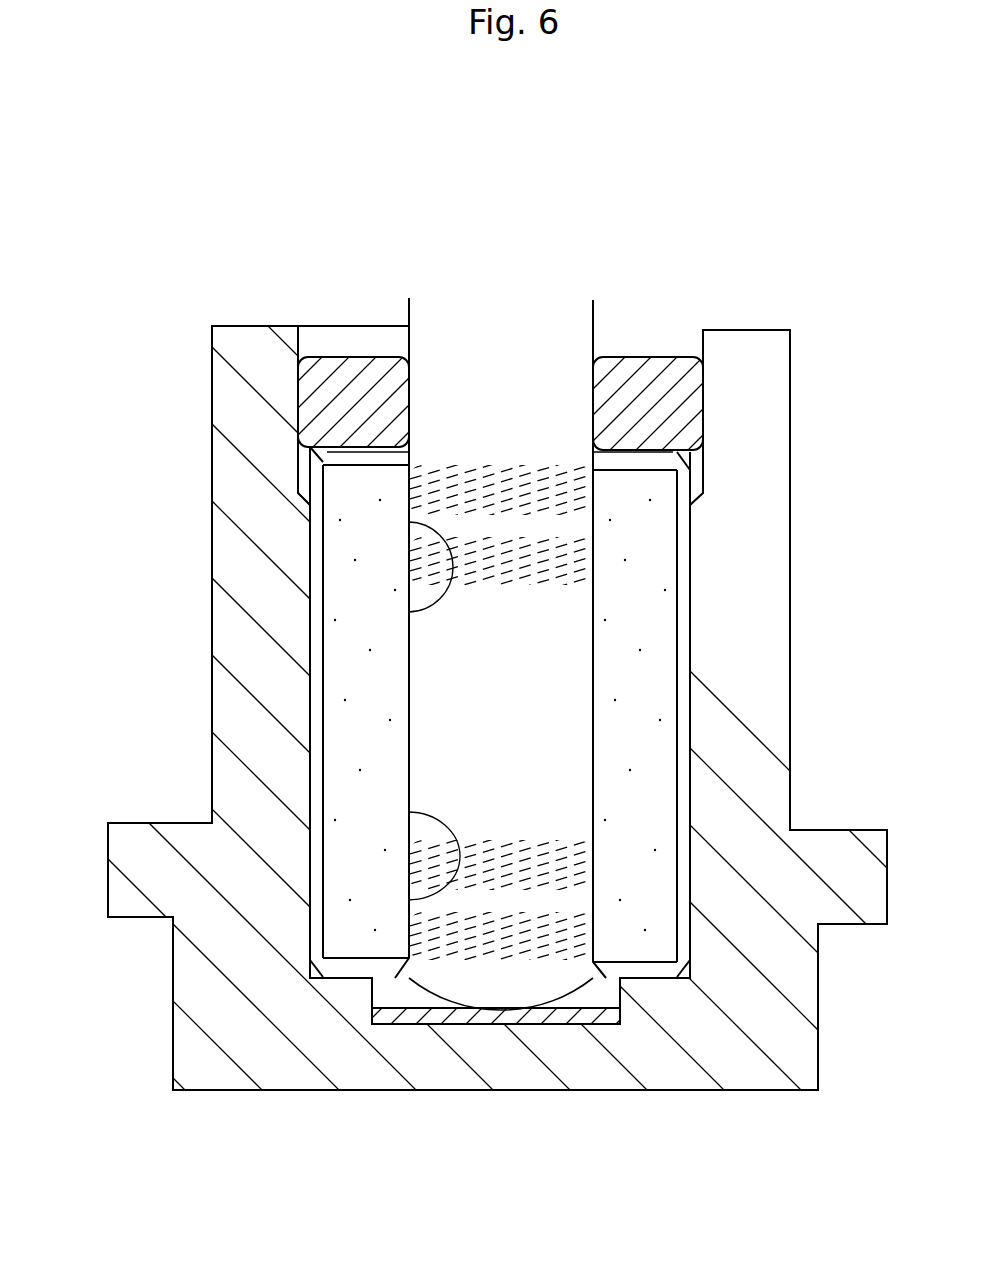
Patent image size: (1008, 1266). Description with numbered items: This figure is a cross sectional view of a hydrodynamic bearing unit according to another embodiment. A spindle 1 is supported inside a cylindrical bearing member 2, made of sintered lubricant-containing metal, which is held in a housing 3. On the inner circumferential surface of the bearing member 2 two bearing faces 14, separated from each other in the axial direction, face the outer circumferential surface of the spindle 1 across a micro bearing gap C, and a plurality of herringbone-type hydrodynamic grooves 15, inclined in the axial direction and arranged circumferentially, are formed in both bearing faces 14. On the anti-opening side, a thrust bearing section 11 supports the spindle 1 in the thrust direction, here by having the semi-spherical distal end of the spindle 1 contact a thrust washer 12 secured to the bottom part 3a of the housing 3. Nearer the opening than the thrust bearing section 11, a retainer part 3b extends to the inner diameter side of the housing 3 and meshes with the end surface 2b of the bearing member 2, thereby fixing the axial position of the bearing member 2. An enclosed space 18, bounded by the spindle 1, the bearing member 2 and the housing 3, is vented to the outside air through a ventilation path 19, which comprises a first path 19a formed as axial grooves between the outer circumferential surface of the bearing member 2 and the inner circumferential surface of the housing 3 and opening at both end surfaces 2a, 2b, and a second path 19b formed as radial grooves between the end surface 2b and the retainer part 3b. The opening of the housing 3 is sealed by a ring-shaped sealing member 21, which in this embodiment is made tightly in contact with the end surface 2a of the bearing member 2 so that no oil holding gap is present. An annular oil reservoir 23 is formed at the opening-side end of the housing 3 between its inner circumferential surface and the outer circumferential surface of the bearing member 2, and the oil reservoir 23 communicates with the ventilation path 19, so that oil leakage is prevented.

The spindle 1 is at (427, 337).
The bearing member 2 is at (345, 723).
The end surface of bearing member on opening side 2a is at (663, 397).
The end surface of bearing member on anti-opening side 2b is at (637, 987).
The housing 3 is at (240, 568).
The bottom part 3a is at (528, 1080).
The retainer part 3b is at (660, 987).
The thrust bearing section 11 is at (483, 1015).
The thrust washer 12 is at (383, 1028).
The bearing faces 14 is at (408, 613).
The hydrodynamic grooves 15 is at (520, 467).
The enclosed space 18 is at (590, 1000).
The ventilation path 19 is at (690, 693).
The first path 19a is at (320, 692).
The second path 19b is at (347, 968).
The sealing member 21 is at (643, 377).
The oil reservoir 23 is at (305, 468).
The bearing gap C is at (593, 600).